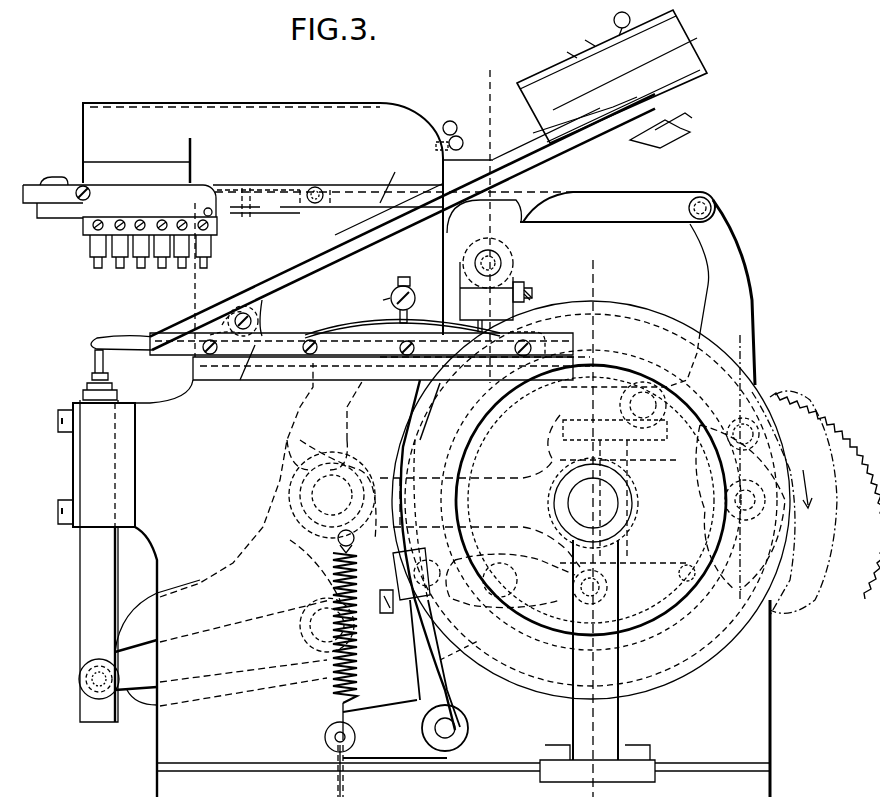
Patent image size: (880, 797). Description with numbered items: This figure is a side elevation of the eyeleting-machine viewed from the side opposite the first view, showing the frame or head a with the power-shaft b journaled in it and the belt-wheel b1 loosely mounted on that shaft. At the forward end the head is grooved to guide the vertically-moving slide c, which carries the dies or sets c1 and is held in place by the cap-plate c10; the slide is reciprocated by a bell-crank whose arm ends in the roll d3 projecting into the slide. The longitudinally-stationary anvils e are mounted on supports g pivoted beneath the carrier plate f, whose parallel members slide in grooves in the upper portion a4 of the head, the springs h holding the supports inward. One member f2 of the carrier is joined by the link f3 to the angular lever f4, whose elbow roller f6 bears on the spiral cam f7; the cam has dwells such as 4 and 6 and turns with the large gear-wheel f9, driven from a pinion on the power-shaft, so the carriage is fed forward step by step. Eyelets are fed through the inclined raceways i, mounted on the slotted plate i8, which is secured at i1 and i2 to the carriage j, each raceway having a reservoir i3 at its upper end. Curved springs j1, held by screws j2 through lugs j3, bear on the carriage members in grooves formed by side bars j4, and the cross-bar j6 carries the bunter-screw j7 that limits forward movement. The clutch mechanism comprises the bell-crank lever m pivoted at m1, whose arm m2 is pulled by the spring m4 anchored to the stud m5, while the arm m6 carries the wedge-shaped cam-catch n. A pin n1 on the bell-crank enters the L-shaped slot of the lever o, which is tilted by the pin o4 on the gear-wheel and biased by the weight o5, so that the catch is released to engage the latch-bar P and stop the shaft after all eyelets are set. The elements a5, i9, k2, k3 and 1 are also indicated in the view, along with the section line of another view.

The frame or head a is at (452, 580).
The upper portion of the head a4 is at (329, 219).
The guide block a5 is at (104, 465).
The power-shaft b is at (597, 528).
The belt-wheel b1 is at (606, 320).
The vertically-moving slide c is at (80, 575).
The dies or sets c1 is at (85, 385).
The cap-plate c10 is at (73, 458).
The roll d3 is at (78, 680).
The longitudinally-stationary sets, dies, or anvils e is at (92, 246).
The carrier plate f is at (44, 182).
The member of the carrier plate f2 is at (303, 177).
The link f3 is at (392, 173).
The lever f4 is at (735, 312).
The roller f6 is at (750, 420).
The cam f7 is at (788, 522).
The gear-wheel f9 is at (797, 408).
The supports g is at (58, 220).
The springs h is at (137, 200).
The inclined raceways i is at (285, 275).
The securing point of slotted plate i1 is at (502, 263).
The securing point of slotted plate i2 is at (247, 317).
The reservoir i3 is at (612, 76).
The slotted plate i8 is at (350, 255).
The bracket i9 is at (515, 250).
The carriage j is at (165, 375).
The springs j1 is at (342, 322).
The screws j2 is at (403, 276).
The lugs j3 is at (377, 292).
The side bars j4 is at (239, 380).
The cross-bar j6 is at (480, 312).
The bunter-screw j7 is at (535, 290).
The finger k2 is at (690, 130).
The rollers k3 is at (470, 162).
The bell-crank lever m is at (420, 712).
The pivot of bell-crank lever m1 is at (458, 730).
The arm of bell-crank lever m2 is at (364, 750).
The spring m4 is at (330, 636).
The stud m5 is at (337, 540).
The arm of bell-crank lever m6 is at (418, 655).
The cam-catch n is at (413, 395).
The pin n1 is at (464, 638).
The lever o is at (395, 565).
The pin o4 is at (678, 563).
The weight o5 is at (510, 568).
The latch-bar P is at (532, 460).
The arm roller 1 is at (633, 201).
The dwell or pause of cam 4 is at (40, 185).
The dwell or pause of cam 6 is at (489, 213).